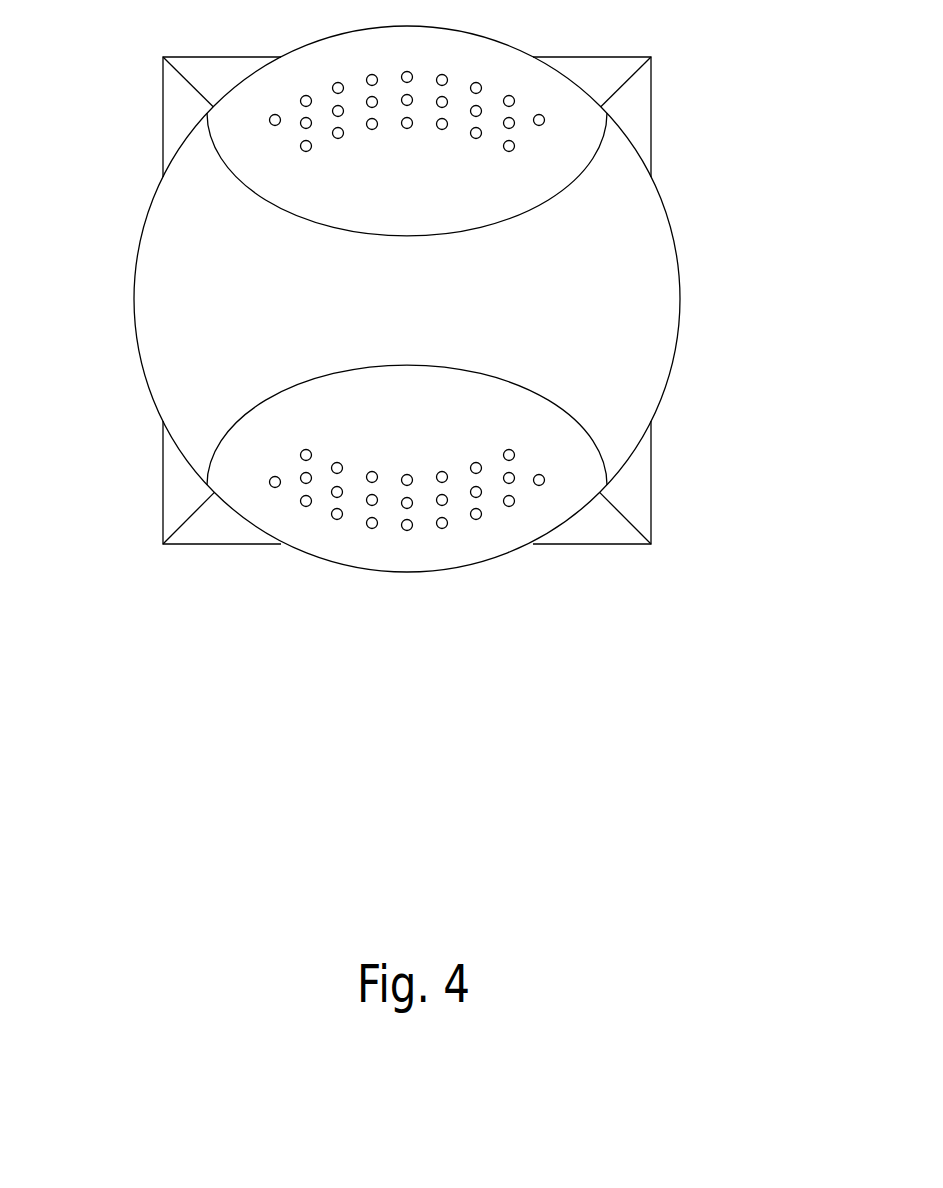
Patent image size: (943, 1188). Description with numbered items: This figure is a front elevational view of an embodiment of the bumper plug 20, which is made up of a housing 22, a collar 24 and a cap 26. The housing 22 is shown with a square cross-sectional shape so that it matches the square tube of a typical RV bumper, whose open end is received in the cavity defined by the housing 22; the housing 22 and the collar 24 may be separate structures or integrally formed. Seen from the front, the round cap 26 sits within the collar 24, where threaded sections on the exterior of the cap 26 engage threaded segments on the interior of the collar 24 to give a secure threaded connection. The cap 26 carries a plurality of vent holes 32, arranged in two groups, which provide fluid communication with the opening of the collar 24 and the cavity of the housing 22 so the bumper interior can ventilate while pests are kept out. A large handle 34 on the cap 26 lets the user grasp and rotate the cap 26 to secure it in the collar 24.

The bumper plug 20 is at (120, 132).
The housing 22 is at (652, 502).
The collar 24 is at (679, 327).
The cap 26 is at (641, 232).
The vent holes 32 is at (375, 107).
The handle 34 is at (409, 348).